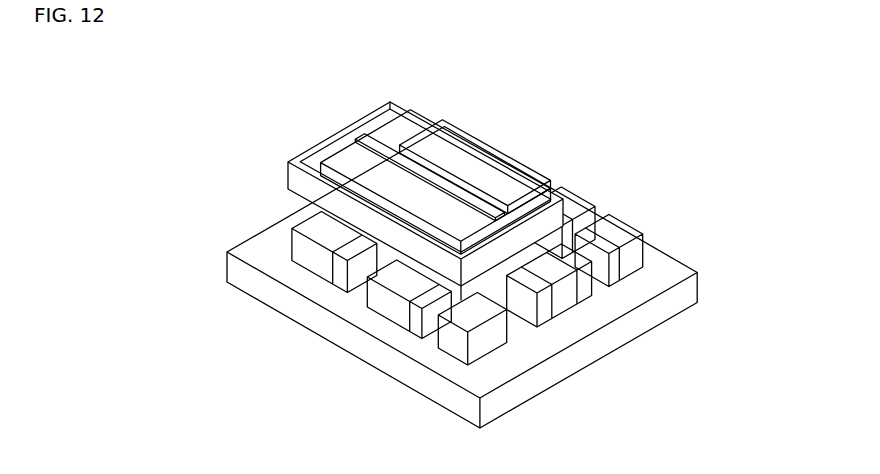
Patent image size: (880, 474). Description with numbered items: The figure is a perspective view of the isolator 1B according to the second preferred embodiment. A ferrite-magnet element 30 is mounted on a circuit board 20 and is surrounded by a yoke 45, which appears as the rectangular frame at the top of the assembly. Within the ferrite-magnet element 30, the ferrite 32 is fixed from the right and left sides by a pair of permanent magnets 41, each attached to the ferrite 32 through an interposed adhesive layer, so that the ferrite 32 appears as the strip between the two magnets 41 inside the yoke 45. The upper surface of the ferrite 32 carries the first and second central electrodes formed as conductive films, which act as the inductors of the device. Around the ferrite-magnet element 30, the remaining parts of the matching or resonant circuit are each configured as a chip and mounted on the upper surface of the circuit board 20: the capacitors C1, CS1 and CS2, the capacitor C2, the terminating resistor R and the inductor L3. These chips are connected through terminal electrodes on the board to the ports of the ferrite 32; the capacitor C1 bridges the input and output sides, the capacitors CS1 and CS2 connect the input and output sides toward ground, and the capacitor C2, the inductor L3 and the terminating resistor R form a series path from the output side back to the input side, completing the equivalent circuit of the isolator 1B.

The isolator 1B is at (216, 84).
The circuit board 20 is at (672, 267).
The ferrite-magnet element 30 is at (432, 154).
The ferrite 32 is at (357, 143).
The permanent magnets 41 is at (334, 160).
The yoke 45 is at (510, 168).
The capacitor CS1 is at (307, 223).
The capacitor CS2 is at (610, 230).
The capacitor C1 is at (548, 192).
The capacitor C2 is at (568, 300).
The terminating resistor R is at (398, 320).
The inductor L3 is at (457, 353).